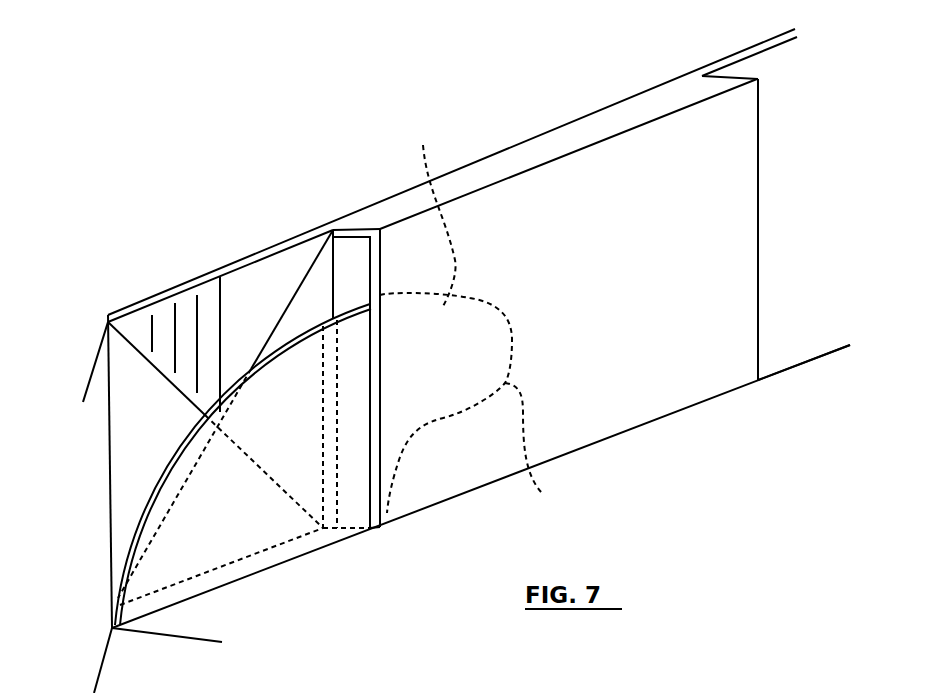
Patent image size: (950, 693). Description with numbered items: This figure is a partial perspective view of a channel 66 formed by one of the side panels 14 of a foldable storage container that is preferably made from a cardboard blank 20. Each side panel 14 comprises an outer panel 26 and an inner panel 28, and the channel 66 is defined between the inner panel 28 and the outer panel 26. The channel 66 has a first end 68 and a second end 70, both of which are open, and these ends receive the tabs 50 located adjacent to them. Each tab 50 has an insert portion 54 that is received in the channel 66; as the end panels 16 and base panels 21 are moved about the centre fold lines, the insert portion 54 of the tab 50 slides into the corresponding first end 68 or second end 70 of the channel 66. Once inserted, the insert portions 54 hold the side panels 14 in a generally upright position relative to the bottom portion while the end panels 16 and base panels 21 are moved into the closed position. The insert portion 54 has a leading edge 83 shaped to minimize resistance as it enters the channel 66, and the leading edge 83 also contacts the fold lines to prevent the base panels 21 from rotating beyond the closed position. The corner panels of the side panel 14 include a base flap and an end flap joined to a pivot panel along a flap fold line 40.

The side panel 14 is at (540, 112).
The outer panel 26 is at (640, 92).
The second end 70 is at (765, 156).
The inner panel 28 is at (652, 421).
The cardboard blank 20 is at (804, 519).
The end panel 16 is at (98, 375).
The tab 50 is at (275, 549).
The channel 66 is at (352, 247).
The first end 68 is at (355, 257).
The insert portion 54 is at (432, 210).
The leading edge 83 is at (481, 404).
The base panel 21 is at (180, 632).
The flap fold line 40 is at (480, 690).